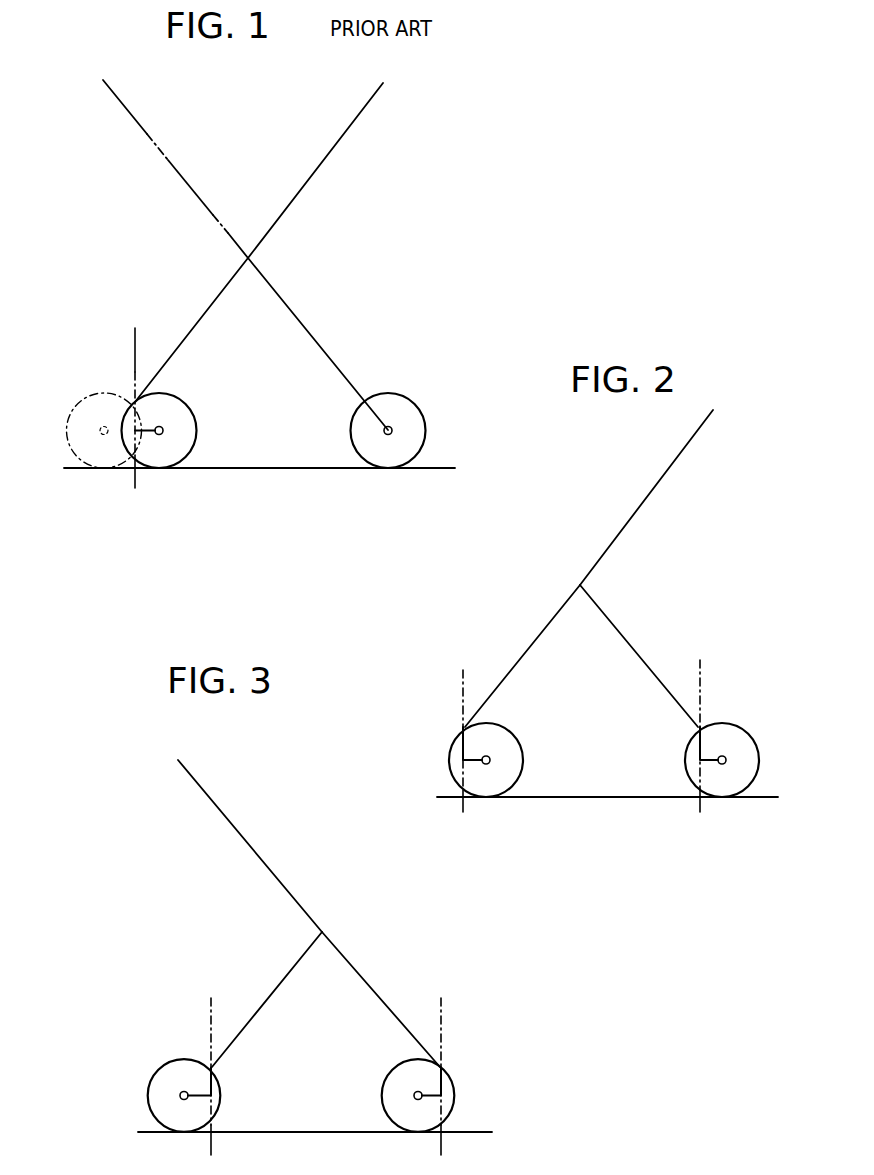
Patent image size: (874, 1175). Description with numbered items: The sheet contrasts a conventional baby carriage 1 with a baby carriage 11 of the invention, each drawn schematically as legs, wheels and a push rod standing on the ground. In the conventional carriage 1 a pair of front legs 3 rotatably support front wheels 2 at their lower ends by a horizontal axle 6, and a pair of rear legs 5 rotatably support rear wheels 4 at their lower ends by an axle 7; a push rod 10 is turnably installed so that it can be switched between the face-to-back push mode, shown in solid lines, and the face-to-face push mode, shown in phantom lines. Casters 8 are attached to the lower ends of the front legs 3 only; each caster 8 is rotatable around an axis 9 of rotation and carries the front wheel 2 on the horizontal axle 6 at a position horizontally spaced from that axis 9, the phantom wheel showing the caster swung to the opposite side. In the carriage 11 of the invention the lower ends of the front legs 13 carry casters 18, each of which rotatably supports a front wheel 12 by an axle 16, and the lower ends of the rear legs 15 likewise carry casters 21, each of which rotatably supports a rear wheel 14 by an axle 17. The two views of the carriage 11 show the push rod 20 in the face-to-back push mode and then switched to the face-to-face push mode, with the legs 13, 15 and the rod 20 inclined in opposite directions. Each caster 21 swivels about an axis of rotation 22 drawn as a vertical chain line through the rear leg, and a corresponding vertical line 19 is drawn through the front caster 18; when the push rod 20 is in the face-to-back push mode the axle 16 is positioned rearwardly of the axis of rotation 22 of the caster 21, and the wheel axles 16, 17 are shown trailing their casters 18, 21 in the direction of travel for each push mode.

In FIG. 1, the baby carriage 1 is at (247, 175).
In FIG. 1, the front wheel 2 is at (80, 400).
In FIG. 1, the front leg 3 is at (196, 329).
In FIG. 1, the rear wheel 4 is at (399, 393).
In FIG. 1, the rear leg 5 is at (307, 329).
In FIG. 1, the axle 6 is at (99, 431).
In FIG. 1, the axle 7 is at (393, 428).
In FIG. 1, the caster 8 is at (134, 402).
In FIG. 1, the axis of rotation 9 is at (134, 352).
In FIG. 1, the push rod 10 is at (168, 160).
In FIG. 2, the baby carriage 11 is at (558, 515).
In FIG. 3, the baby carriage 11 is at (366, 879).
In FIG. 2, the front wheel 12 is at (520, 735).
In FIG. 3, the front wheel 12 is at (222, 1090).
In FIG. 2, the front leg 13 is at (518, 661).
In FIG. 3, the front leg 13 is at (263, 1007).
In FIG. 2, the rear wheel 14 is at (718, 722).
In FIG. 3, the rear wheel 14 is at (392, 1077).
In FIG. 2, the rear leg 15 is at (628, 643).
In FIG. 3, the rear leg 15 is at (363, 977).
In FIG. 2, the axle 16 is at (491, 760).
In FIG. 3, the axle 16 is at (180, 1094).
In FIG. 2, the axle 17 is at (724, 755).
In FIG. 3, the axle 17 is at (414, 1095).
In FIG. 2, the caster 18 is at (460, 745).
In FIG. 3, the caster 18 is at (215, 1077).
In FIG. 2, the vertical reference line 19 is at (458, 690).
In FIG. 3, the vertical reference line 19 is at (208, 1033).
In FIG. 2, the push rod 20 is at (663, 478).
In FIG. 3, the push rod 20 is at (230, 822).
In FIG. 2, the caster 21 is at (698, 747).
In FIG. 3, the caster 21 is at (450, 1077).
In FIG. 2, the axis of rotation 22 is at (702, 670).
In FIG. 3, the axis of rotation 22 is at (443, 1018).